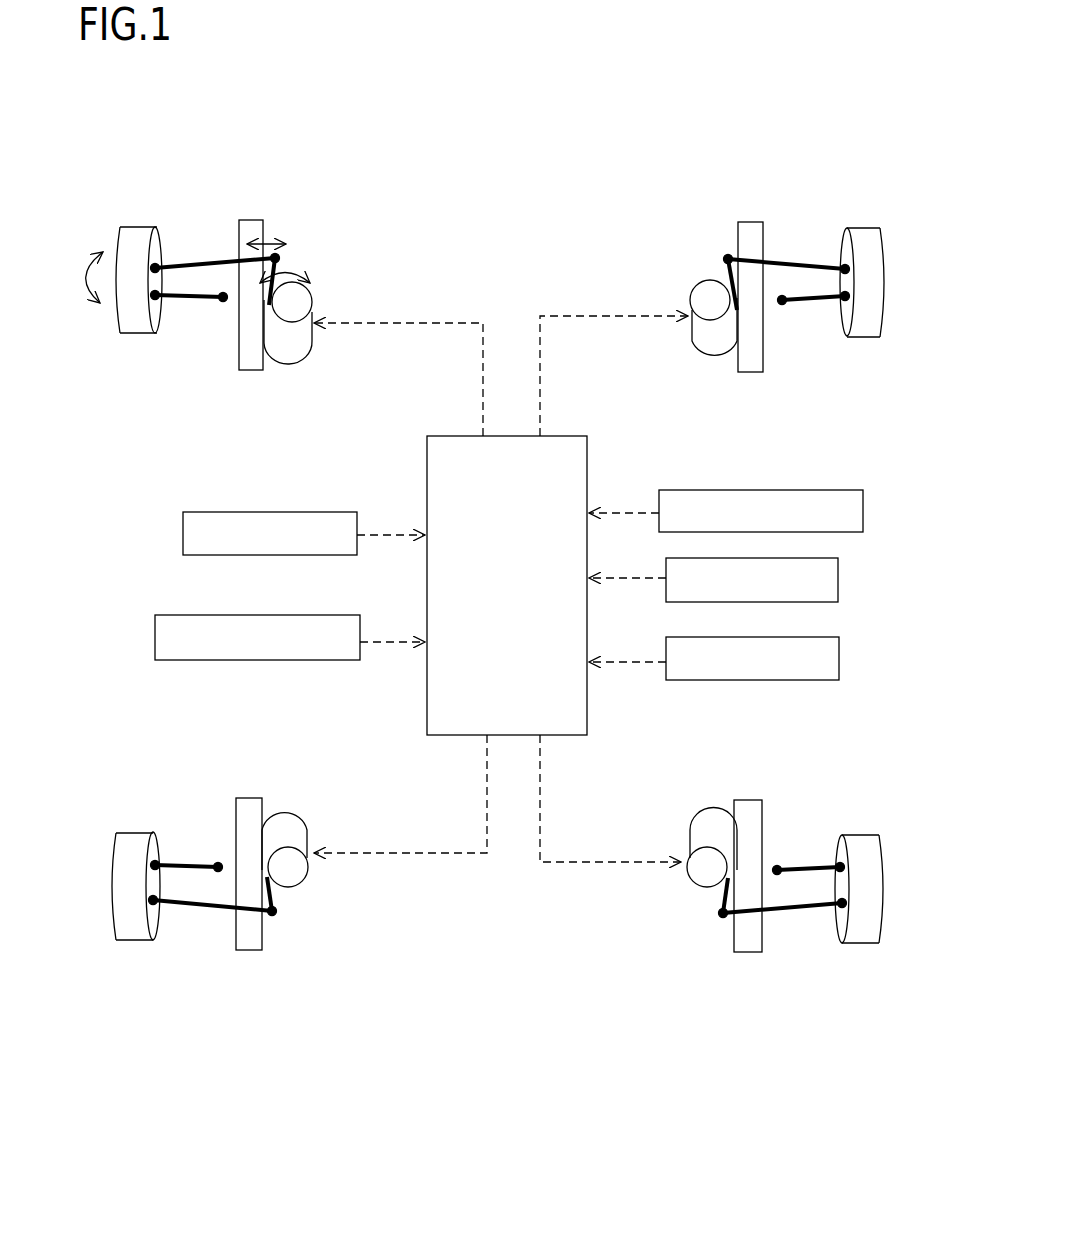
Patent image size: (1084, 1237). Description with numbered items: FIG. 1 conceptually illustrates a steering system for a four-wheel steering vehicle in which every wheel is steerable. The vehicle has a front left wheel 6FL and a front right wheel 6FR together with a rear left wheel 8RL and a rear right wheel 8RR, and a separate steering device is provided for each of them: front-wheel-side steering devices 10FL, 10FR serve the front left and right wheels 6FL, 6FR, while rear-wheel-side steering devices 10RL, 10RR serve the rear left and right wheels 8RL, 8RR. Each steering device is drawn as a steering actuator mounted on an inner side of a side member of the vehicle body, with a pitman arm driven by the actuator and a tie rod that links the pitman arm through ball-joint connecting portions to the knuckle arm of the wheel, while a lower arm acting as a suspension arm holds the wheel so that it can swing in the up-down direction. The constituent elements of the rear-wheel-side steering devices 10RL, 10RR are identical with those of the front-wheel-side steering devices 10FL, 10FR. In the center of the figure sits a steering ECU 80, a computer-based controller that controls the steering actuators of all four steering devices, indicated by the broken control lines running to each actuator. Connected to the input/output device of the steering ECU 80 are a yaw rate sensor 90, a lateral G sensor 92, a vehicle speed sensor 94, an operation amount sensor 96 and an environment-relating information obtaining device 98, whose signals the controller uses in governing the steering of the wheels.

The front-wheel-side steering device 10FL is at (203, 160).
The front-wheel-side steering device 10FR is at (810, 180).
The rear-wheel-side steering device 10RL is at (225, 986).
The rear-wheel-side steering device 10RR is at (772, 978).
The front left wheel 6FL is at (130, 253).
The front right wheel 6FR is at (870, 235).
The rear left wheel 8RL is at (122, 857).
The rear right wheel 8RR is at (872, 857).
The steering ECU 80 is at (437, 465).
The yaw rate sensor 90 is at (842, 497).
The lateral G sensor 92 is at (830, 578).
The vehicle speed sensor 94 is at (823, 647).
The operation amount sensor 96 is at (205, 512).
The environment-relating information obtaining device 98 is at (183, 615).